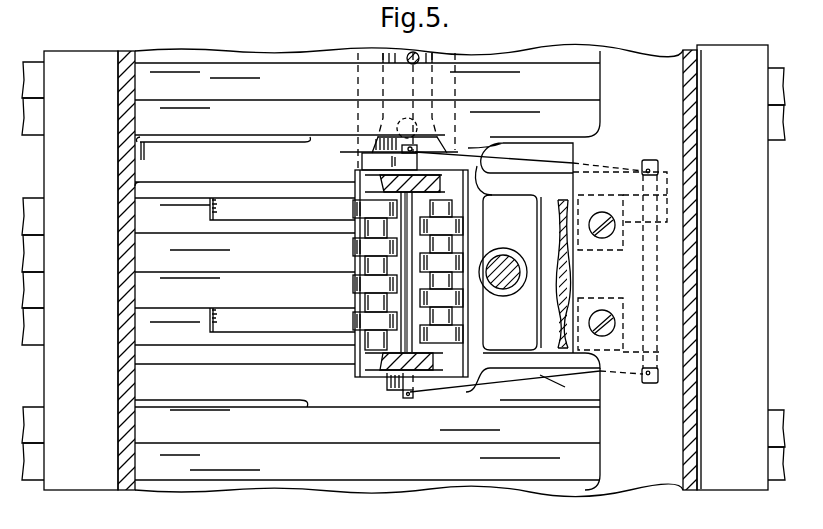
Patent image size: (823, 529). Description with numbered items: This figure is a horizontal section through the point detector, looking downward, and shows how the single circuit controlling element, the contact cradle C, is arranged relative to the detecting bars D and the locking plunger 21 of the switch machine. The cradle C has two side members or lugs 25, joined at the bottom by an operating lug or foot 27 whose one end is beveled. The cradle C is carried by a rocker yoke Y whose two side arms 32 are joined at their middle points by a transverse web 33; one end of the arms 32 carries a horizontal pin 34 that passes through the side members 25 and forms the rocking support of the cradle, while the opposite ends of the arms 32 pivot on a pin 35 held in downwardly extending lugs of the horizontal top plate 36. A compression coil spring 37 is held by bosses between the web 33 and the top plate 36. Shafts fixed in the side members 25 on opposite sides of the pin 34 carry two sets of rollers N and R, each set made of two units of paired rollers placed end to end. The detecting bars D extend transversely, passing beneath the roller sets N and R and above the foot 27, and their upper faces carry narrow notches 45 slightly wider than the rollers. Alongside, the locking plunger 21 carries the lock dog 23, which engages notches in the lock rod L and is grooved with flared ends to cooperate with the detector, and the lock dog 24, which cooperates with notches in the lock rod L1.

The locking bar or plunger 21 is at (366, 160).
The lock dog 23 is at (440, 63).
The lock dog 24 is at (428, 483).
The side members or lugs 25 is at (377, 180).
The operating lug or foot 27 is at (407, 134).
The side arms 32 is at (467, 160).
The transverse web 33 is at (512, 272).
The horizontal pin 34 is at (403, 398).
The pin 35 is at (647, 160).
The horizontal top plate 36 is at (562, 208).
The compression coil spring 37 is at (504, 296).
The grooves or notches 45 is at (350, 282).
The set of rollers R is at (460, 258).
The set of rollers N is at (352, 292).
The contact cradle C is at (355, 355).
The rocker yoke Y is at (559, 386).
The lock rod L is at (35, 118).
The lock rod L1 is at (33, 462).
The detecting bars D is at (33, 327).